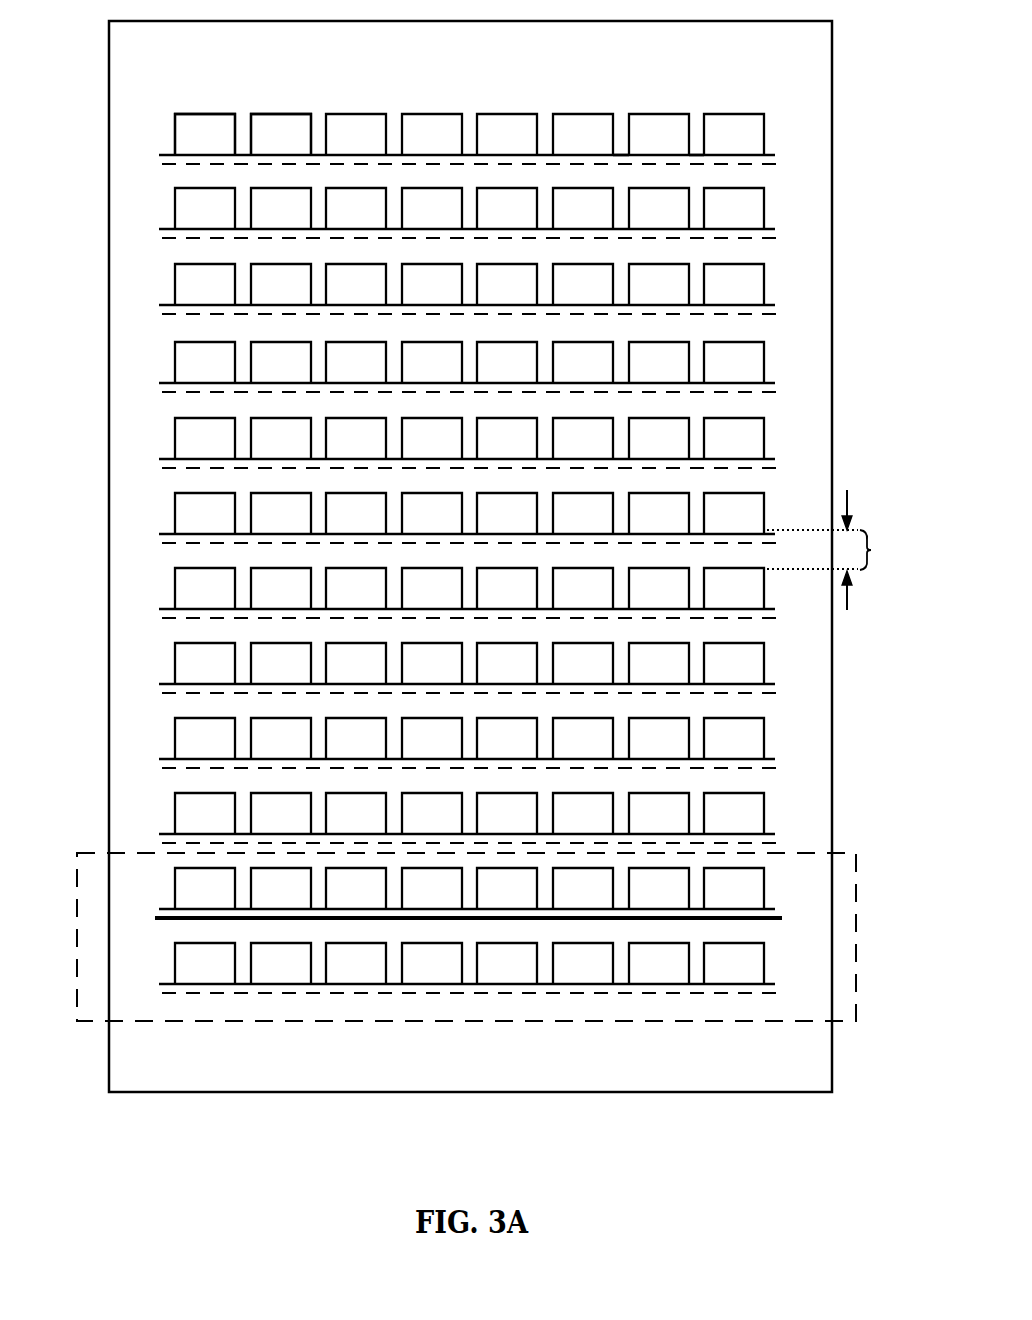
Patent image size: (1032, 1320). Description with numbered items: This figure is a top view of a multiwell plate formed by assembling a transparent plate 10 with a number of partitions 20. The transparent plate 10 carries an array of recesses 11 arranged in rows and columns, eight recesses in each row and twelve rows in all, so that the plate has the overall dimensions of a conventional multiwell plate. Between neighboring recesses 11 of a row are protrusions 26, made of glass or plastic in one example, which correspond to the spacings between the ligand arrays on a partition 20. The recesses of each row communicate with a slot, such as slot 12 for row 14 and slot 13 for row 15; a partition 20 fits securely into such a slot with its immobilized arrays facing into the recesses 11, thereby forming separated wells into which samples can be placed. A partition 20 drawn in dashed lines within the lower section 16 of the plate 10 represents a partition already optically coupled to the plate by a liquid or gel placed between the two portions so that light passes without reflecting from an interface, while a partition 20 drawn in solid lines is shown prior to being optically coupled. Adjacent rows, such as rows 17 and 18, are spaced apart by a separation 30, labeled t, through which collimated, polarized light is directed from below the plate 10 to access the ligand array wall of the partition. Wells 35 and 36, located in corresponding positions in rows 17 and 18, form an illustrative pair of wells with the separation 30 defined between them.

The transparent plate 10 is at (807, 390).
The recesses 11 is at (278, 121).
The slot 12 is at (773, 155).
The slot 13 is at (770, 230).
The row 14 is at (158, 122).
The row 15 is at (158, 208).
The section of plate 16 is at (810, 897).
The row 17 is at (158, 506).
The row 18 is at (158, 581).
The partition 20 is at (152, 988).
The protrusions 26 is at (692, 110).
The separation 30 is at (829, 537).
The well 35 is at (747, 507).
The well 36 is at (755, 592).